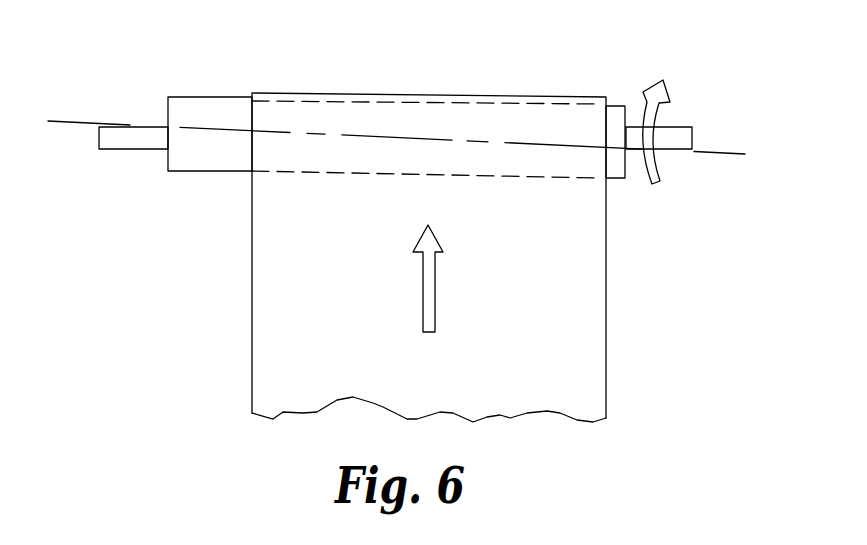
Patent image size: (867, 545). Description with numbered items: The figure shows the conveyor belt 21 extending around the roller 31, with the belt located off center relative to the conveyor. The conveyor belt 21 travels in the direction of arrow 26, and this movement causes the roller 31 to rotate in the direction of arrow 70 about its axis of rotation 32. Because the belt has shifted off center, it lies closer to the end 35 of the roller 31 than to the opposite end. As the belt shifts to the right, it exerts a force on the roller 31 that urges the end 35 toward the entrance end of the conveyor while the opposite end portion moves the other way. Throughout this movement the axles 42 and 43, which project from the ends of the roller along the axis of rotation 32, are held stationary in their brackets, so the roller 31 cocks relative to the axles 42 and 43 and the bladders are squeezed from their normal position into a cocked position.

The conveyor belt 21 is at (574, 279).
The arrow 26 is at (435, 283).
The roller 31 is at (192, 97).
The axis of rotation 32 is at (730, 147).
The end 35 is at (617, 106).
The axle 42 is at (120, 127).
The axle 43 is at (682, 127).
The arrow 70 is at (659, 167).